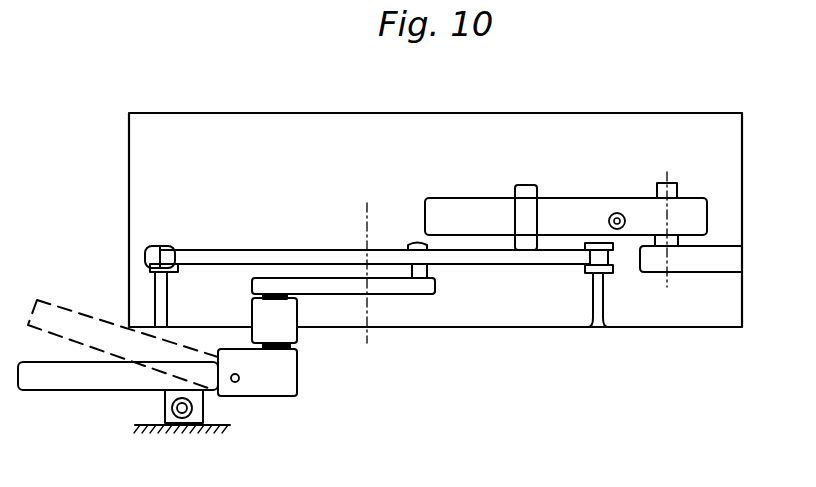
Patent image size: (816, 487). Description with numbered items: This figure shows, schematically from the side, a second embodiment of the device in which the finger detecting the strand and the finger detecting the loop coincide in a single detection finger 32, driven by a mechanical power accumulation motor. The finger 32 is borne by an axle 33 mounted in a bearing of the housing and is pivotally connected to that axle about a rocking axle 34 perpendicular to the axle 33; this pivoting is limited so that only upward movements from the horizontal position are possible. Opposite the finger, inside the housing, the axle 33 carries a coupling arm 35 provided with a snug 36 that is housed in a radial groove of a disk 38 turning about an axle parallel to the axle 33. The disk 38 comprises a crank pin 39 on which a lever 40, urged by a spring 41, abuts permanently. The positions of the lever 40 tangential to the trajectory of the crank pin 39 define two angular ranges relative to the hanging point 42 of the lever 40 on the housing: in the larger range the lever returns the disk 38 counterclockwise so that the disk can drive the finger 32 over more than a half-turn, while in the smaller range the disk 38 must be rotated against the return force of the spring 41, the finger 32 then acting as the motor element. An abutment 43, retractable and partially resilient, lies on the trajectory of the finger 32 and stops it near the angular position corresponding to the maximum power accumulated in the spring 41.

The detection finger 32 is at (57, 380).
The axle 33 is at (277, 385).
The rocking axle 34 is at (239, 381).
The coupling arm 35 is at (345, 294).
The snug 36 is at (417, 278).
The disk 38 is at (205, 253).
The crank pin 39 is at (525, 223).
The lever 40 is at (472, 210).
The spring 41 is at (618, 213).
The hanging point 42 is at (677, 190).
The abutment 43 is at (177, 423).